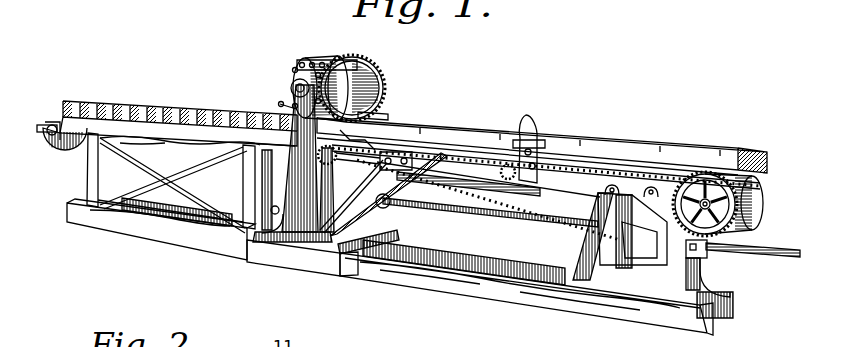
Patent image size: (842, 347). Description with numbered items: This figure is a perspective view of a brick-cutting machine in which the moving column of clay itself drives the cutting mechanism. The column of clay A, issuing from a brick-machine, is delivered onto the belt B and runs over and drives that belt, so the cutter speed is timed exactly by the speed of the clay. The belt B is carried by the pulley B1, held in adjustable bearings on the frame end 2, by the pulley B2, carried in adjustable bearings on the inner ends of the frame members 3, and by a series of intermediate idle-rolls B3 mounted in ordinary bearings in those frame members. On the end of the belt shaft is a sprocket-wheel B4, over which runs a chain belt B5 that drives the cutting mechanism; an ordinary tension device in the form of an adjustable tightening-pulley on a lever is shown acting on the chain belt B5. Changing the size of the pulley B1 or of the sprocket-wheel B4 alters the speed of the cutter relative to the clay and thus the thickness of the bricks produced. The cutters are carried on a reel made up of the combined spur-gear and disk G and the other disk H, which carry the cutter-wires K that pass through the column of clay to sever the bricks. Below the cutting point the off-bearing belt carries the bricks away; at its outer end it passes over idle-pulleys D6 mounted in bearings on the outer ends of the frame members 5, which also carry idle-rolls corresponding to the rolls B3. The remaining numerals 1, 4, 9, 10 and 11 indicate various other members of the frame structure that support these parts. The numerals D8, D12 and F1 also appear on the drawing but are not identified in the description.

The frame member 1 is at (456, 282).
The frame end 2 is at (716, 270).
The frame members 3 is at (590, 183).
The frame member 4 is at (411, 233).
The frame members 5 is at (214, 143).
The frame member 9 is at (293, 112).
The frame member 10 is at (397, 217).
The frame member 11 is at (241, 166).
The column of clay A is at (643, 150).
The belt B is at (740, 190).
The pulley B1 is at (740, 235).
The pulley B2 is at (428, 130).
The intermediate idle-rolls B3 is at (737, 222).
The sprocket-wheel B4 is at (614, 214).
The chain belt B5 is at (532, 122).
The idle-pulleys D6 is at (82, 153).
The chain D8 is at (508, 216).
The post D12 is at (97, 180).
The bracket F1 is at (388, 124).
The combined spur-gear and disk G is at (384, 115).
The disk H is at (294, 78).
The cutter-wires K is at (334, 58).